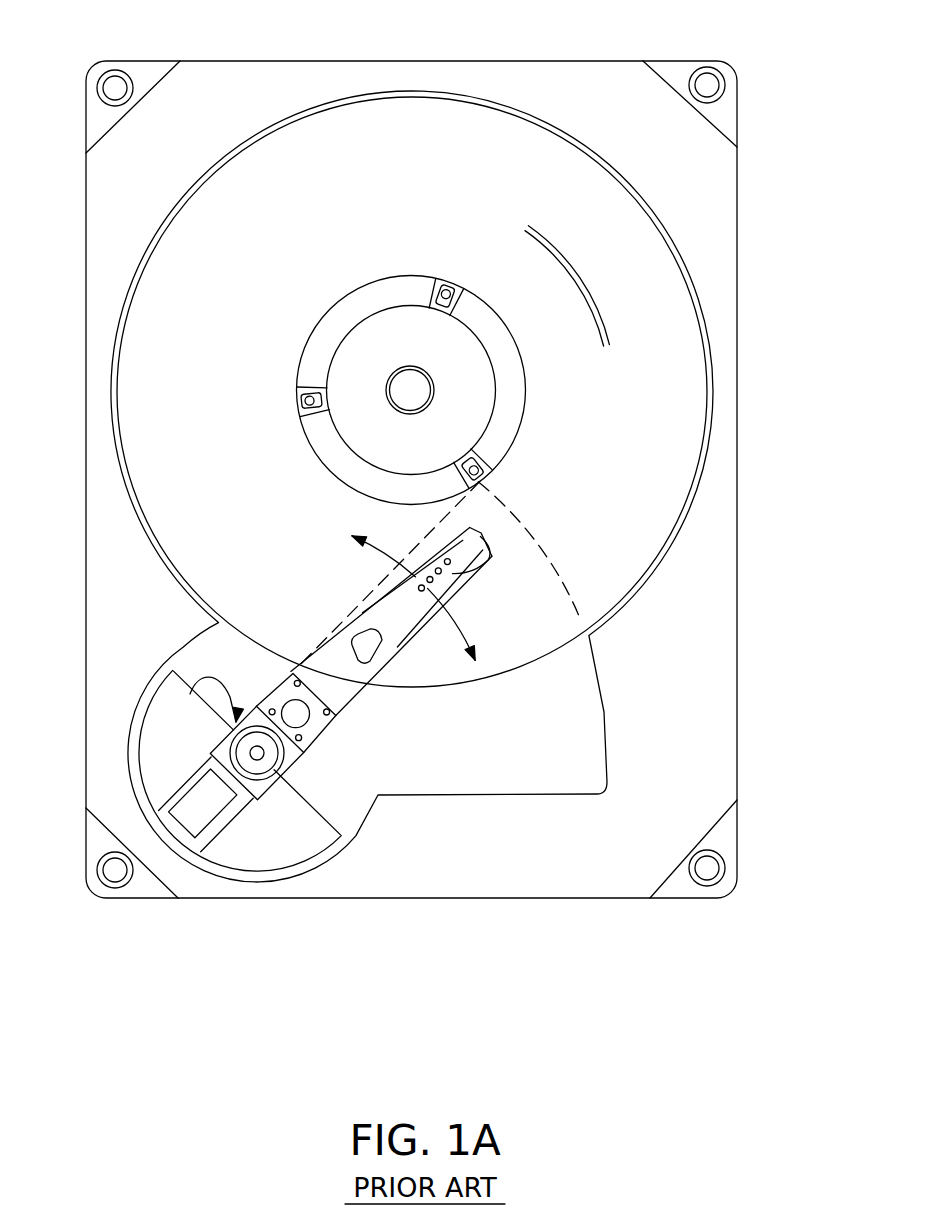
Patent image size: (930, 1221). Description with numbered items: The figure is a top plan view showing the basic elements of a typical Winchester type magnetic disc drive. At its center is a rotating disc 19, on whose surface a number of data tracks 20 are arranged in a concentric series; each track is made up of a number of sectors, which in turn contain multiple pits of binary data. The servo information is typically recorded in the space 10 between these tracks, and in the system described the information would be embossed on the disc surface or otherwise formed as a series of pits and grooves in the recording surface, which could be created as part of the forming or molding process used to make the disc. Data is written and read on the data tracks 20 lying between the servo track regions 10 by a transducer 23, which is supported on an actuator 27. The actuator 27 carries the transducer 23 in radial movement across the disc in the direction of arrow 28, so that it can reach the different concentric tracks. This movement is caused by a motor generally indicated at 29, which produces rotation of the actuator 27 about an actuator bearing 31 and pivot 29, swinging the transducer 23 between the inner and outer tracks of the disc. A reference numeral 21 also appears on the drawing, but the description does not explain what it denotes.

The space between tracks 10 is at (523, 222).
The rotating disc 19 is at (421, 181).
The data tracks 20 is at (580, 267).
The motor 21 is at (428, 400).
The transducer 23 is at (486, 527).
The actuator 27 is at (322, 677).
The arrow 28 is at (427, 598).
The motor and pivot 29 is at (258, 760).
The actuator bearing 31 is at (272, 760).